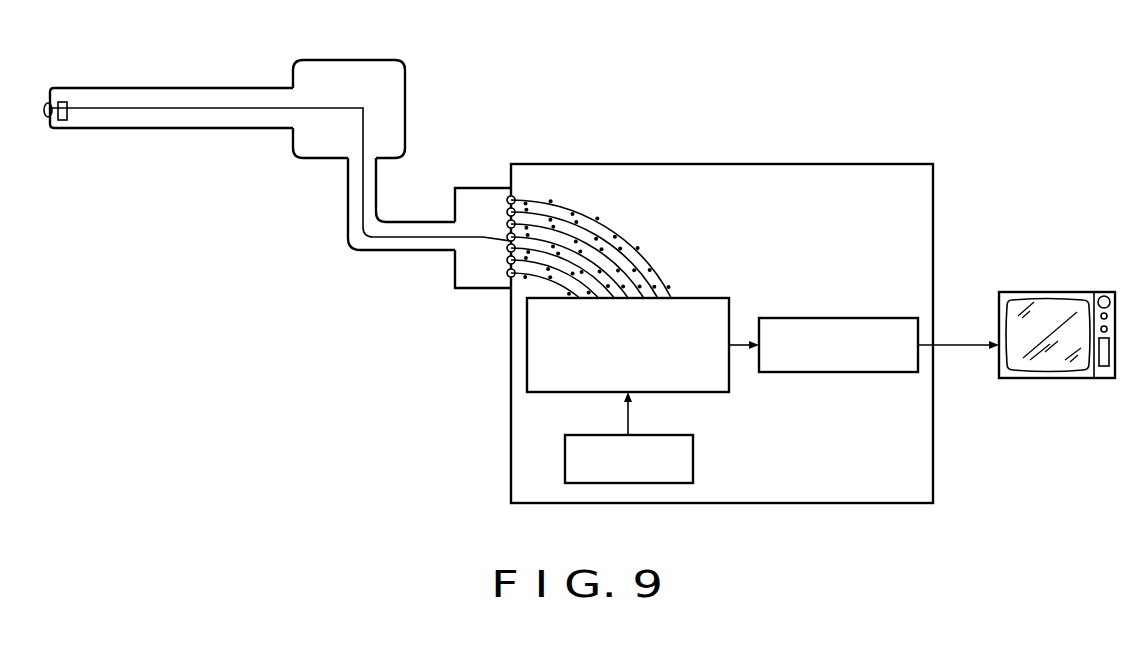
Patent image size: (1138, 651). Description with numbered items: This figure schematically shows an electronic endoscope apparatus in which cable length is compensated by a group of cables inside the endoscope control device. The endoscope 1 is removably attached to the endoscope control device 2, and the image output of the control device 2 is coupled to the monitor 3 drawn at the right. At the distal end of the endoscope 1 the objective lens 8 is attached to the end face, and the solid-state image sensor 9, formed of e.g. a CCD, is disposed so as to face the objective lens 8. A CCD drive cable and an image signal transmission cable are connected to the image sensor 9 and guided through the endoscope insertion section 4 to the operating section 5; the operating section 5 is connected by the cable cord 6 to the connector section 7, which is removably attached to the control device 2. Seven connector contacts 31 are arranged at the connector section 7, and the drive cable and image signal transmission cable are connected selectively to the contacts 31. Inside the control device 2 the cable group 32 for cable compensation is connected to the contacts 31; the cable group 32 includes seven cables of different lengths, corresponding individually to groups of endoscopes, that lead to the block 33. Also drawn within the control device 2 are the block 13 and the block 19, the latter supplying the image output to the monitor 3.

The endoscope 1 is at (186, 74).
The endoscope control device 2 is at (758, 166).
The monitor 3 is at (1050, 292).
The endoscope insertion section 4 is at (236, 98).
The operating section 5 is at (400, 69).
The cable cord 6 is at (415, 222).
The connector section 7 is at (474, 282).
The objective lens 8 is at (47, 117).
The solid-state image sensor 9 is at (63, 121).
The control circuit 13 is at (695, 455).
The video processor 19 is at (837, 318).
The connector contacts 31 is at (508, 212).
The cable group 32 is at (632, 240).
The CCD drive circuit and sample-and-hold circuit 33 is at (713, 297).